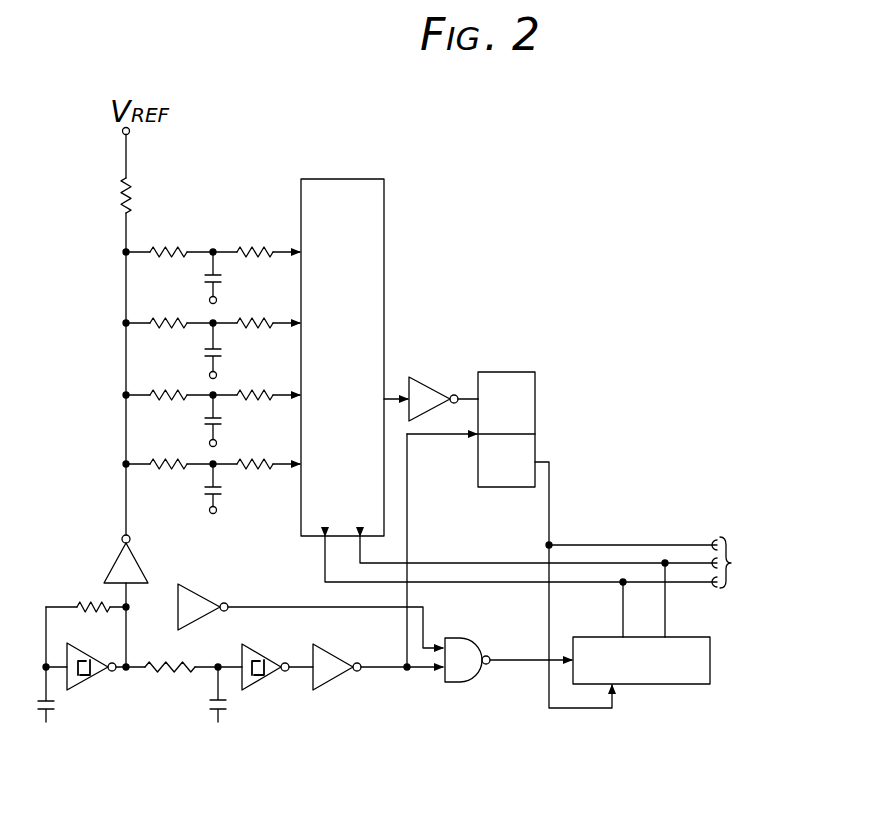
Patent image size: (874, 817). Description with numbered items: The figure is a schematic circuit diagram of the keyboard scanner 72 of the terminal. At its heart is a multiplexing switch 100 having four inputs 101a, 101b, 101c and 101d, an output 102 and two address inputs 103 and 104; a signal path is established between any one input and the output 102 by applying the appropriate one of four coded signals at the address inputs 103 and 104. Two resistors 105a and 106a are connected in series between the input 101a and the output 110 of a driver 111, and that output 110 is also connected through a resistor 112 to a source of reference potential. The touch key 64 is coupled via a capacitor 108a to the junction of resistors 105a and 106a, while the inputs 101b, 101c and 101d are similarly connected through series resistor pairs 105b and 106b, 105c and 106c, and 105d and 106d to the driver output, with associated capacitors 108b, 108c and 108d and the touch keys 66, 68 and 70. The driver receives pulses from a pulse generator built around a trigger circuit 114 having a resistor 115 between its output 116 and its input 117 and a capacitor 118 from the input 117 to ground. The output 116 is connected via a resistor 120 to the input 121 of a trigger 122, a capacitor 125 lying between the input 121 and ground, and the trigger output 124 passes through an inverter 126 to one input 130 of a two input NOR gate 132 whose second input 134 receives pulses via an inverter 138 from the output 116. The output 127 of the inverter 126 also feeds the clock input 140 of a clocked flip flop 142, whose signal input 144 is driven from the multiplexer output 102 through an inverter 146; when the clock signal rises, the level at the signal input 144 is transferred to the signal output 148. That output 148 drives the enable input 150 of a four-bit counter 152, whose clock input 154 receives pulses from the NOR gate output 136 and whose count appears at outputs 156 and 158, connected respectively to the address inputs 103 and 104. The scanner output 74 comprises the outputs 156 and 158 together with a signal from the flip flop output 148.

The touch key 64 is at (209, 299).
The touch key 66 is at (209, 372).
The touch key 68 is at (209, 442).
The touch key 70 is at (209, 510).
The scanner 72 is at (628, 376).
The output 74 is at (653, 562).
The multiplexing switch 100 is at (340, 178).
The input 101a is at (309, 249).
The input 101b is at (309, 320).
The input 101c is at (309, 392).
The input 101d is at (308, 464).
The output 102 is at (390, 392).
The address input 103 is at (323, 565).
The address input 104 is at (362, 557).
The resistor 105a is at (168, 248).
The resistor 105b is at (162, 326).
The resistor 105c is at (162, 398).
The resistor 105d is at (162, 467).
The resistor 106a is at (254, 248).
The resistor 106b is at (270, 310).
The resistor 106c is at (270, 381).
The resistor 106d is at (270, 451).
The capacitor 108a is at (204, 278).
The capacitor 108b is at (205, 350).
The capacitor 108c is at (205, 420).
The capacitor 108d is at (204, 489).
The output 110 is at (122, 536).
The driver 111 is at (128, 566).
The resistor 112 is at (120, 198).
The trigger circuit 114 is at (88, 673).
The resistor 115 is at (78, 603).
The output 116 is at (114, 670).
The input 117 is at (39, 660).
The capacitor 118 is at (62, 706).
The resistor 120 is at (168, 660).
The input 121 is at (243, 676).
The trigger 122 is at (257, 670).
The output 124 is at (285, 673).
The capacitor 125 is at (200, 706).
The inverter 126 is at (350, 647).
The output 127 is at (403, 677).
The input 130 is at (445, 669).
The NOR gate 132 is at (471, 670).
The second input 134 is at (440, 648).
The output 136 is at (487, 656).
The inverter 138 is at (190, 600).
The clock input 140 is at (475, 441).
The clocked flip flop 142 is at (518, 393).
The signal input 144 is at (472, 393).
The inverter 146 is at (420, 400).
The signal output 148 is at (542, 455).
The enable input 150 is at (619, 692).
The counter 152 is at (678, 679).
The clock input 154 is at (573, 667).
The output 156 is at (617, 636).
The output 158 is at (667, 636).